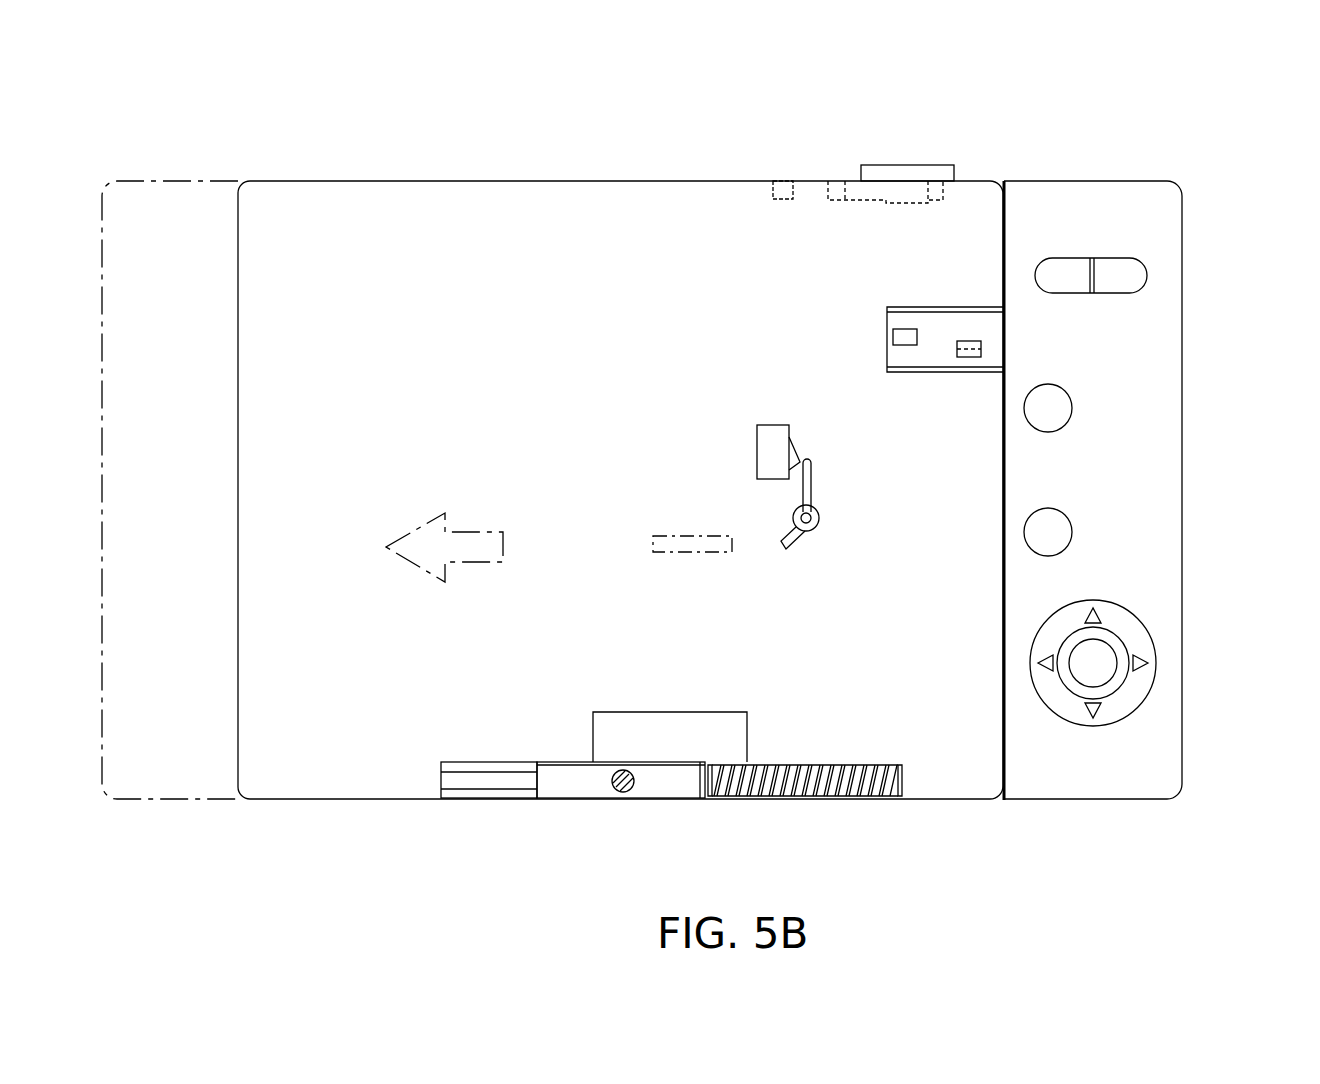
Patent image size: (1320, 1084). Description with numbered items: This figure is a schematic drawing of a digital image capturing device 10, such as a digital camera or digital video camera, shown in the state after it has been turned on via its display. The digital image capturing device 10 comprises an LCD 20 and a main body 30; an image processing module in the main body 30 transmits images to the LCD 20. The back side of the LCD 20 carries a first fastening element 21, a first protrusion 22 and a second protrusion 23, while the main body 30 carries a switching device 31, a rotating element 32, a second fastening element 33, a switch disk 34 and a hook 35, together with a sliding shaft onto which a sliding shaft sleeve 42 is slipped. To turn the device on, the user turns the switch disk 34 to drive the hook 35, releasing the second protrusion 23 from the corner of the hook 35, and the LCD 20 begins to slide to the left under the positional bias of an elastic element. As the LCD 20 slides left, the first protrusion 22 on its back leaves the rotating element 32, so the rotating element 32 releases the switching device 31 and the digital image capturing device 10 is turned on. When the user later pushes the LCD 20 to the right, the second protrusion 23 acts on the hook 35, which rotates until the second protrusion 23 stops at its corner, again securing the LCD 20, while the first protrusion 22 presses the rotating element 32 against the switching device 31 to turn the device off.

The digital image capturing device 10 is at (1257, 166).
The LCD 20 is at (175, 785).
The first fastening element 21 is at (893, 338).
The first protrusion 22 is at (690, 546).
The second protrusion 23 is at (773, 192).
The main body 30 is at (1163, 782).
The switching device 31 is at (757, 446).
The rotating element 32 is at (812, 497).
The second fastening element 33 is at (975, 349).
The switch disk 34 is at (942, 165).
The hook 35 is at (835, 191).
The sliding shaft sleeve 42 is at (581, 787).